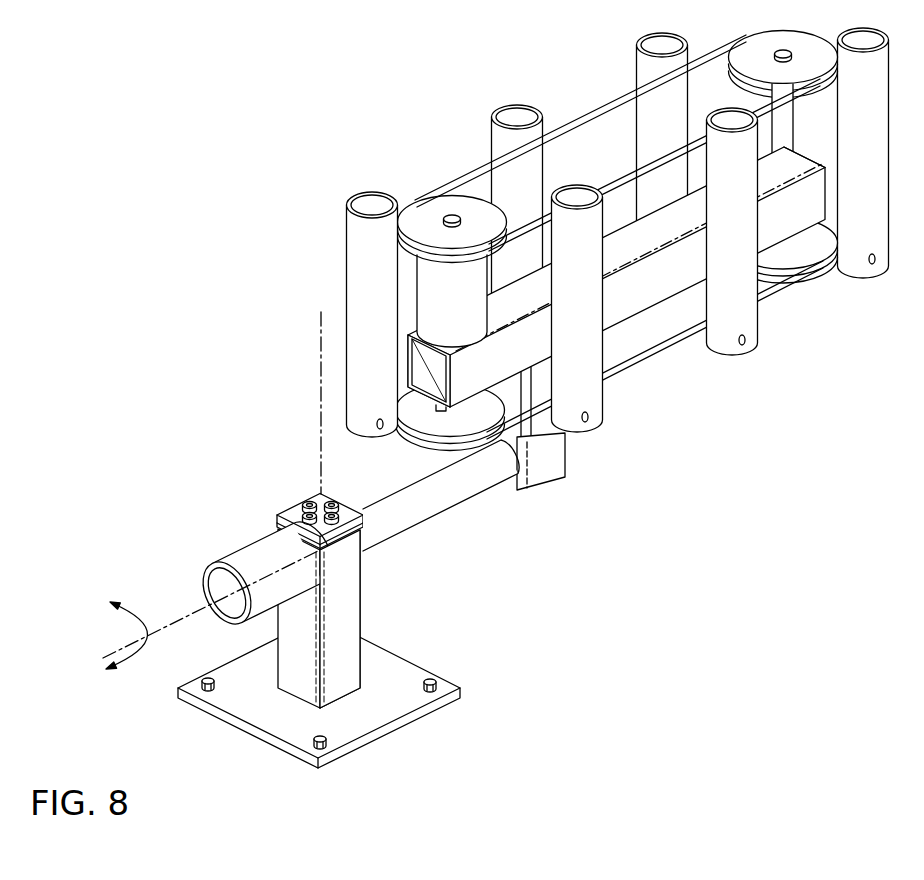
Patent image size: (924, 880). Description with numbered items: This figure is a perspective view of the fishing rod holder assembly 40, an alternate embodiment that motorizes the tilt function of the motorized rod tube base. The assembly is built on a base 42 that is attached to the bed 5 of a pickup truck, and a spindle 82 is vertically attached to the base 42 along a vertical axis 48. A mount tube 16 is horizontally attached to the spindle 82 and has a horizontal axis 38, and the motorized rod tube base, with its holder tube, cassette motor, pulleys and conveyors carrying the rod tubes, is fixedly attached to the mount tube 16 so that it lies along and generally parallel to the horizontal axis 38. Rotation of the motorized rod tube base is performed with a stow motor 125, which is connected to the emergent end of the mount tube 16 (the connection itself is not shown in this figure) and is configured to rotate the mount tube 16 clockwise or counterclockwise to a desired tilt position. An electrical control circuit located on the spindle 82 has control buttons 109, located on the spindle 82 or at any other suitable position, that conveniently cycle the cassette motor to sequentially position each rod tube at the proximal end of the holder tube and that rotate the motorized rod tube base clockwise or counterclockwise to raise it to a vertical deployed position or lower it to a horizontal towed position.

The bed 5 is at (494, 743).
The mount tube 16 is at (442, 487).
The horizontal axis 38 is at (175, 615).
The fishing rod holder assembly 40 is at (335, 175).
The base 42 is at (386, 721).
The vertical axis 48 is at (321, 388).
The spindle 82 is at (345, 587).
The control buttons 109 is at (307, 498).
The stow motor 125 is at (257, 557).